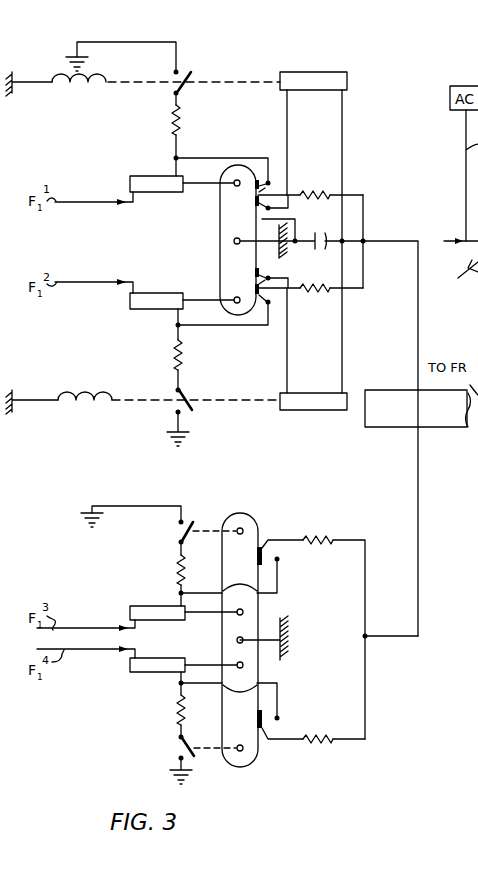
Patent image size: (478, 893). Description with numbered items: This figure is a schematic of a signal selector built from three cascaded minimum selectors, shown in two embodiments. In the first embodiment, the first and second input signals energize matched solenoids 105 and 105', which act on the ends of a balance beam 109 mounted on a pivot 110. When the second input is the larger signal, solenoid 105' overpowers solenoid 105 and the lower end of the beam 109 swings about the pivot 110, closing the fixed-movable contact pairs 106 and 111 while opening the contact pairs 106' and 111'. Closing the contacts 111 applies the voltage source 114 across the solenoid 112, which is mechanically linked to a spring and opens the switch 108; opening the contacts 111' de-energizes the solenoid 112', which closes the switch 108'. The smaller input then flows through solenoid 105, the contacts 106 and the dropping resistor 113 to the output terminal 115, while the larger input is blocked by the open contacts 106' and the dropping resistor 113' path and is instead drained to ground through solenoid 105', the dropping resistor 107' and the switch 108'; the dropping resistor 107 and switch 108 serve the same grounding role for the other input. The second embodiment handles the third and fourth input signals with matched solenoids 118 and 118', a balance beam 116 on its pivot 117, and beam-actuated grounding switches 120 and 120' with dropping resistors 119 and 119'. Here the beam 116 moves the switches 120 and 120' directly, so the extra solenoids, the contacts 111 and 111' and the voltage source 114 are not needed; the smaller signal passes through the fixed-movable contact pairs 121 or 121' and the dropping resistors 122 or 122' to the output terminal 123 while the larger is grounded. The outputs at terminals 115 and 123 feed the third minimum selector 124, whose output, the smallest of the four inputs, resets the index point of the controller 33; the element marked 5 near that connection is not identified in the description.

The matched solenoid 105 is at (146, 173).
The matched solenoid 105' is at (139, 309).
The fixed-movable contact pair 106 is at (247, 195).
The fixed-movable contact pair 106' is at (247, 286).
The dropping resistor 107 is at (193, 129).
The dropping resistor 107' is at (160, 347).
The switch 108 is at (203, 72).
The switch 108' is at (207, 418).
The balance beam 109 is at (220, 238).
The pivot 110 is at (258, 241).
The fixed-movable contact pair 111 is at (244, 204).
The fixed-movable contact pair 111' is at (244, 274).
The solenoid 112 is at (313, 67).
The solenoid 112' is at (313, 419).
The dropping resistor 113 is at (310, 178).
The dropping resistor 113' is at (314, 300).
The voltage source 114 is at (325, 252).
The output terminal 115 is at (367, 241).
The balance beam 116 is at (223, 653).
The pivot 117 is at (270, 652).
The matched solenoid 118 is at (157, 627).
The matched solenoid 118' is at (134, 670).
The dropping resistor 119 is at (158, 566).
The dropping resistor 119' is at (157, 707).
The beam-actuated switch 120 is at (162, 532).
The beam-actuated switch 120' is at (161, 753).
The fixed-movable contact pair 121 is at (286, 557).
The fixed-movable contact pair 121' is at (288, 720).
The dropping resistor 122 is at (299, 529).
The dropping resistor 122' is at (332, 751).
The output terminal 123 is at (366, 636).
The third minimum selector 124 is at (393, 428).
The controller 33 is at (463, 385).
The control arm 5 is at (451, 243).